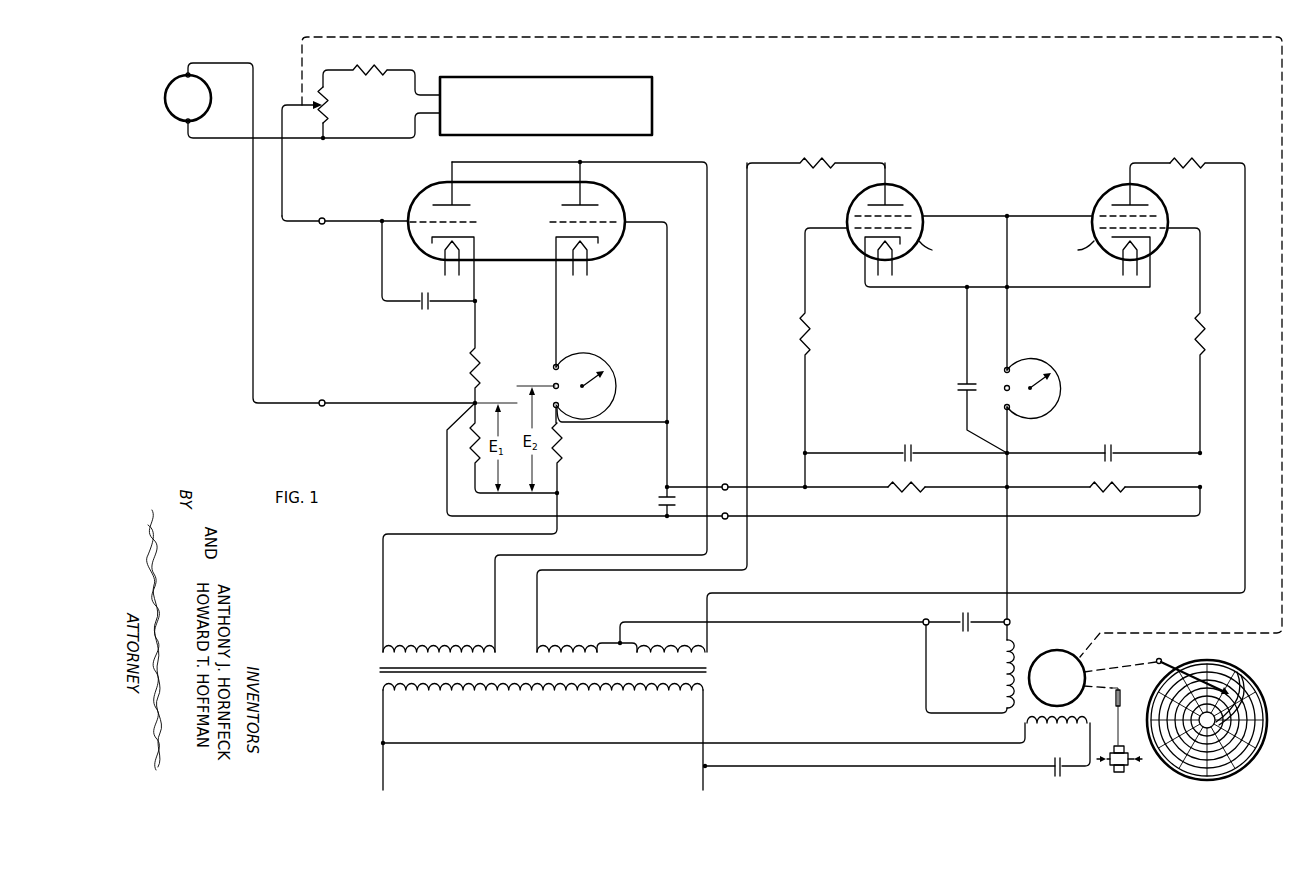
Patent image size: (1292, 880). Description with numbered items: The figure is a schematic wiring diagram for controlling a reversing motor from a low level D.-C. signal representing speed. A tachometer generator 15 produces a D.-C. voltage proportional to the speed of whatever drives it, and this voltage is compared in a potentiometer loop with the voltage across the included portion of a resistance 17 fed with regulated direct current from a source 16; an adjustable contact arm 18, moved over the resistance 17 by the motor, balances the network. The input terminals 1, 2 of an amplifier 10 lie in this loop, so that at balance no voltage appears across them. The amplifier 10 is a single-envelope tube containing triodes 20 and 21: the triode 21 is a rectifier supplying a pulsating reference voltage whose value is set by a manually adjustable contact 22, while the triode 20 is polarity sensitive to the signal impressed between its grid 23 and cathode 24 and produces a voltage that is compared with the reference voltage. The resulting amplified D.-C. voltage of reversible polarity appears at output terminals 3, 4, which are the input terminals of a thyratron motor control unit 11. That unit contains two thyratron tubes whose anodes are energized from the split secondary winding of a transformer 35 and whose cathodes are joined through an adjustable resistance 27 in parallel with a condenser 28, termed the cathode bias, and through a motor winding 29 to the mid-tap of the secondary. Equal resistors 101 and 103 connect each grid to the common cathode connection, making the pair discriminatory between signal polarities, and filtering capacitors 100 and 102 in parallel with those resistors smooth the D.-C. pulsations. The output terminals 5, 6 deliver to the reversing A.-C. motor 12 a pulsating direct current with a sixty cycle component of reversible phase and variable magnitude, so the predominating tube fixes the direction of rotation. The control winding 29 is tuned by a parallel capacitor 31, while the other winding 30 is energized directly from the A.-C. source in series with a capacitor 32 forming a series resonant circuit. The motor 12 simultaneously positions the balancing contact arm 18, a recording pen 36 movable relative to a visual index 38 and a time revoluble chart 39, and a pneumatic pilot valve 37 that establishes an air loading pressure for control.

The input terminal 1 is at (323, 218).
The input terminal 2 is at (323, 400).
The output terminal 3 is at (724, 484).
The output terminal 4 is at (725, 520).
The output terminal 5 is at (926, 619).
The output terminal 6 is at (1010, 620).
The amplifier 10 is at (594, 164).
The thyratron motor control unit 11 is at (996, 171).
The reversing A.-C. motor 12 is at (1048, 651).
The tachometer generator 15 is at (174, 124).
The source of regulated direct current 16 is at (616, 131).
The resistance 17 is at (333, 105).
The adjustable contact arm 18 is at (292, 104).
The triode 20 is at (416, 196).
The triode 21 is at (620, 197).
The manually adjustable contact 22 is at (608, 392).
The grid 23 is at (470, 218).
The cathode 24 is at (478, 238).
The adjustable resistance 27 is at (1050, 362).
The condenser 28 is at (956, 388).
The motor winding 29 is at (1000, 680).
The motor winding 30 is at (1064, 730).
The capacitor 31 is at (965, 634).
The capacitor 32 is at (1056, 780).
The transformer 35 is at (716, 680).
The recording pen 36 is at (1170, 665).
The pneumatic pilot valve 37 is at (1126, 774).
The visual index 38 is at (1247, 689).
The time revoluble chart 39 is at (1240, 768).
The filtering capacitor 100 is at (907, 445).
The resistor 101 is at (906, 478).
The filtering capacitor 102 is at (1107, 445).
The resistor 103 is at (1107, 478).